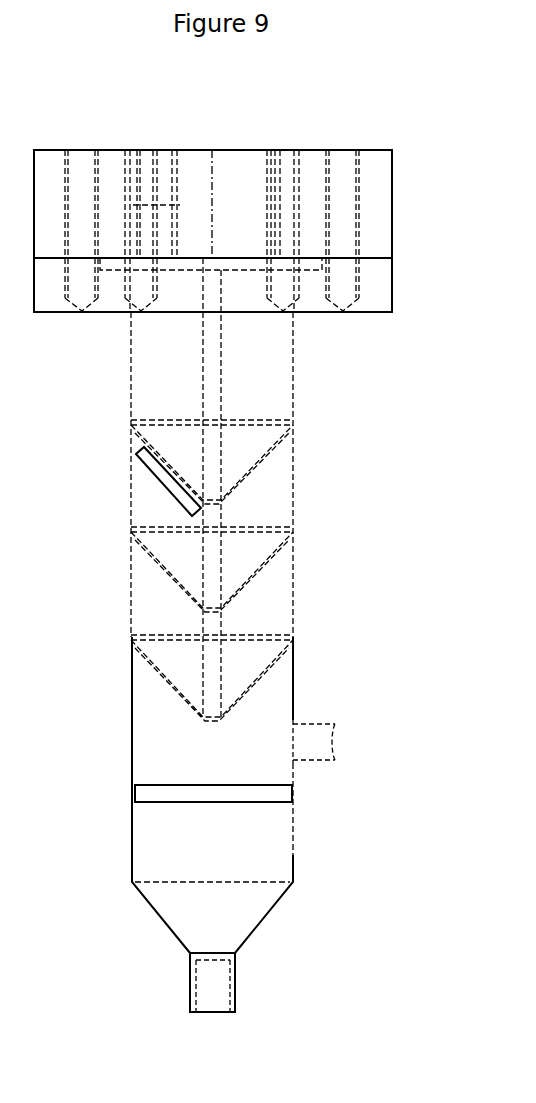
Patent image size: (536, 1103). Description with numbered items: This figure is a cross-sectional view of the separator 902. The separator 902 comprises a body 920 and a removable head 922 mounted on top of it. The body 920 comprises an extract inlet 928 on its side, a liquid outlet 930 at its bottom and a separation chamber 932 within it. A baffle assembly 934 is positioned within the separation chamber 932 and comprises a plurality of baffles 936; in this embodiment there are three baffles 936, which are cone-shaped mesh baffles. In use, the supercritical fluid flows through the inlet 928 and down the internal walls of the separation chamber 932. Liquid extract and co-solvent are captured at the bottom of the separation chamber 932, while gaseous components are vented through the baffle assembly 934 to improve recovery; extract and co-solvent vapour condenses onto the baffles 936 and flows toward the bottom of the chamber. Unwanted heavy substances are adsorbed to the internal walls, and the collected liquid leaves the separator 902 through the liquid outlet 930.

The separator 902 is at (312, 128).
The body 920 is at (294, 442).
The removable head 922 is at (195, 160).
The extract inlet 928 is at (320, 739).
The liquid outlet 930 is at (208, 984).
The separation chamber 932 is at (140, 792).
The baffle assembly 934 is at (188, 433).
The baffles 936 is at (185, 556).